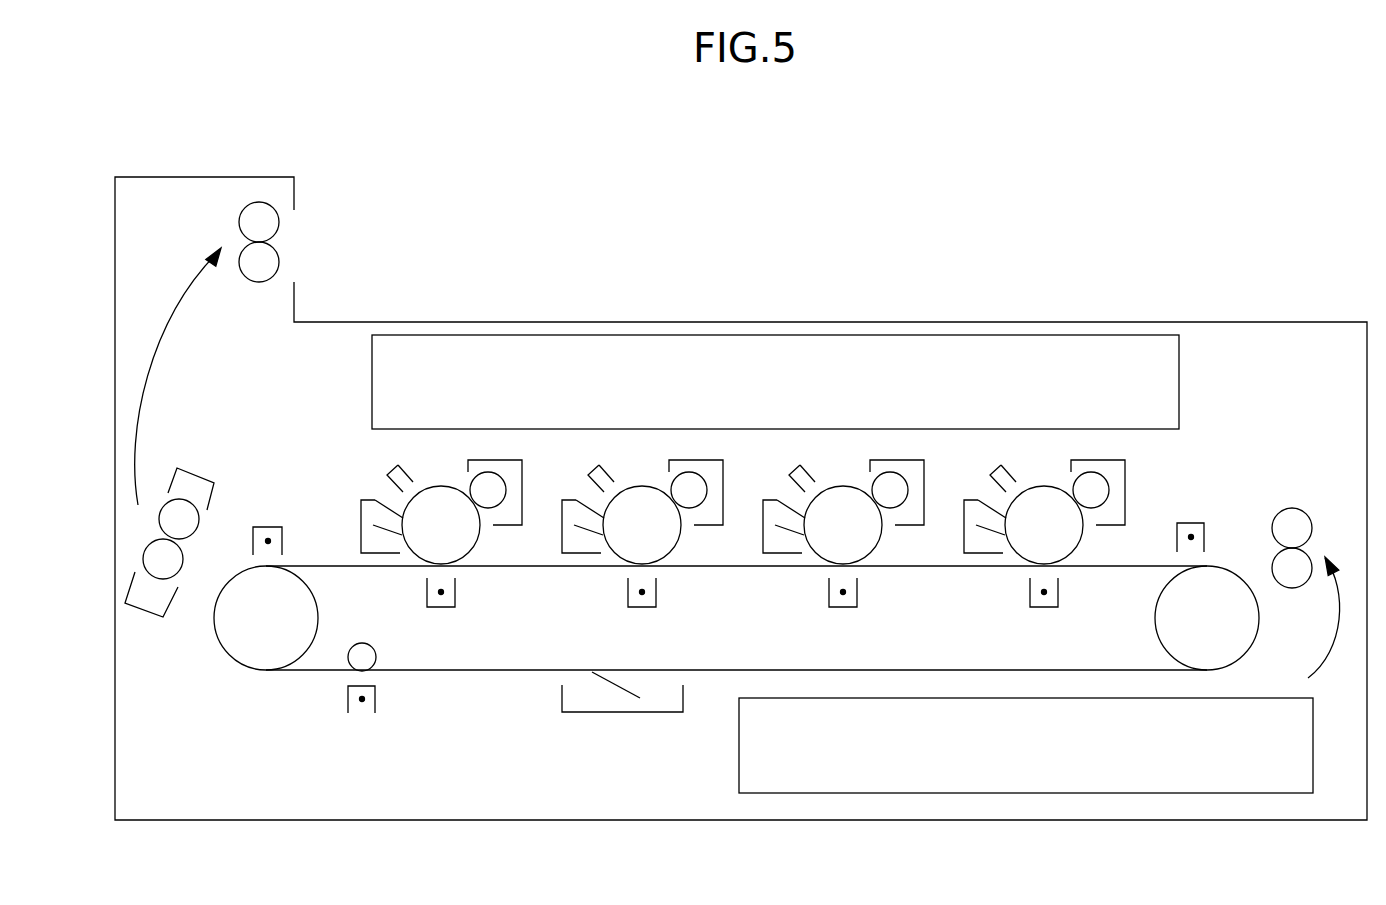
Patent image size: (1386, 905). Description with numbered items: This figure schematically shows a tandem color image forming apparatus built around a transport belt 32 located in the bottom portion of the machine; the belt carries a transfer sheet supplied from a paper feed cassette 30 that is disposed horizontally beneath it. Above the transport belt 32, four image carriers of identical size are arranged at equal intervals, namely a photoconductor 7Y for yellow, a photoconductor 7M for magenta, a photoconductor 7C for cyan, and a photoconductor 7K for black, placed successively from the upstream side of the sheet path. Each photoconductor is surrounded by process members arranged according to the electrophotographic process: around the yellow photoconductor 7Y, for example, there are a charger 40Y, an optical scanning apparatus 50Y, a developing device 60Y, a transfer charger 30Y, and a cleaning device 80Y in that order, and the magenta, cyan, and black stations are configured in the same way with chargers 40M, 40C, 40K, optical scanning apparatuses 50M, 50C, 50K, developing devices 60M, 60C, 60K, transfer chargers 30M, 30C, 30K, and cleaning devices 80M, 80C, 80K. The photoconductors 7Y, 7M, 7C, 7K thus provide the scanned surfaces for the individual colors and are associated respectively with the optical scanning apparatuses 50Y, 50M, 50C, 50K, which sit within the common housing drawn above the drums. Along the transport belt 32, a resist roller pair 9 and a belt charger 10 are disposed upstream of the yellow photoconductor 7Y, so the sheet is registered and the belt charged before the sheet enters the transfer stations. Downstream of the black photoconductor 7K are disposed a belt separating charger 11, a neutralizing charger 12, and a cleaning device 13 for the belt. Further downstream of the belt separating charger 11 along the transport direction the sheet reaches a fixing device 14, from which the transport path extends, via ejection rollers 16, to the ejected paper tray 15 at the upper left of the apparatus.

The photoconductor 7K is at (455, 539).
The photoconductor 7C is at (642, 525).
The photoconductor 7M is at (843, 525).
The photoconductor 7Y is at (1044, 525).
The charger 40K is at (407, 470).
The charger 40C is at (619, 461).
The charger 40M is at (821, 461).
The charger 40Y is at (1021, 461).
The optical scanning apparatus 50K is at (445, 486).
The optical scanning apparatus 50C is at (667, 441).
The optical scanning apparatus 50M is at (868, 441).
The optical scanning apparatus 50Y is at (1070, 441).
The developing device 60K is at (505, 475).
The developing device 60C is at (718, 478).
The developing device 60M is at (920, 478).
The developing device 60Y is at (1120, 478).
The cleaning device 80K is at (378, 553).
The cleaning device 80C is at (580, 556).
The cleaning device 80M is at (780, 556).
The cleaning device 80Y is at (982, 556).
The transfer charger 30K is at (441, 607).
The transfer charger 30C is at (641, 621).
The transfer charger 30M is at (842, 621).
The transfer charger 30Y is at (1044, 621).
The transport belt 32 is at (937, 672).
The paper feed cassette 30 is at (937, 793).
The ejected paper tray 15 is at (573, 322).
The ejection rollers 16 is at (270, 222).
The fixing device 14 is at (145, 613).
The cleaning device 13 is at (622, 712).
The neutralizing charger 12 is at (362, 713).
The belt separating charger 11 is at (270, 525).
The belt charger 10 is at (1192, 523).
The resist roller pair 9 is at (1300, 567).